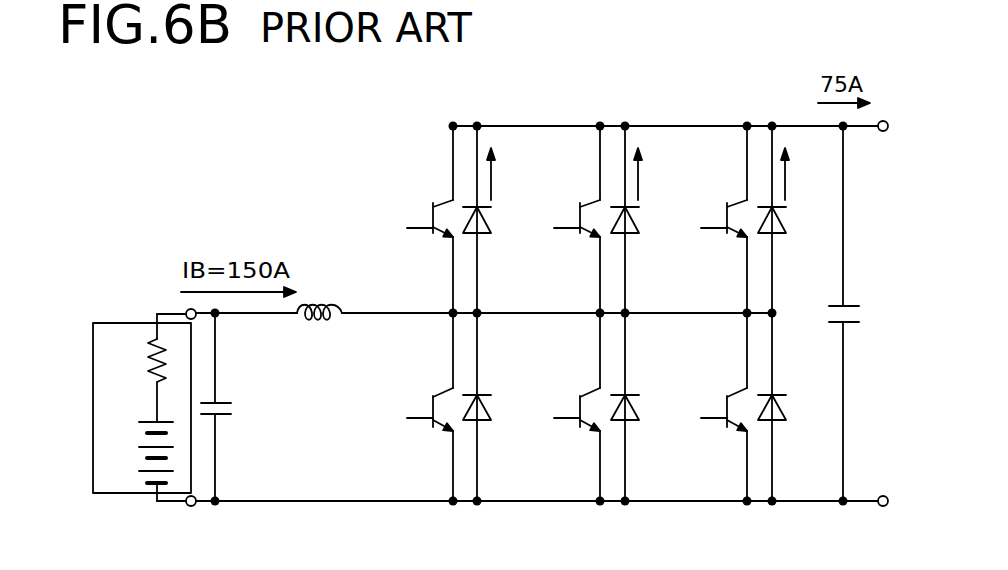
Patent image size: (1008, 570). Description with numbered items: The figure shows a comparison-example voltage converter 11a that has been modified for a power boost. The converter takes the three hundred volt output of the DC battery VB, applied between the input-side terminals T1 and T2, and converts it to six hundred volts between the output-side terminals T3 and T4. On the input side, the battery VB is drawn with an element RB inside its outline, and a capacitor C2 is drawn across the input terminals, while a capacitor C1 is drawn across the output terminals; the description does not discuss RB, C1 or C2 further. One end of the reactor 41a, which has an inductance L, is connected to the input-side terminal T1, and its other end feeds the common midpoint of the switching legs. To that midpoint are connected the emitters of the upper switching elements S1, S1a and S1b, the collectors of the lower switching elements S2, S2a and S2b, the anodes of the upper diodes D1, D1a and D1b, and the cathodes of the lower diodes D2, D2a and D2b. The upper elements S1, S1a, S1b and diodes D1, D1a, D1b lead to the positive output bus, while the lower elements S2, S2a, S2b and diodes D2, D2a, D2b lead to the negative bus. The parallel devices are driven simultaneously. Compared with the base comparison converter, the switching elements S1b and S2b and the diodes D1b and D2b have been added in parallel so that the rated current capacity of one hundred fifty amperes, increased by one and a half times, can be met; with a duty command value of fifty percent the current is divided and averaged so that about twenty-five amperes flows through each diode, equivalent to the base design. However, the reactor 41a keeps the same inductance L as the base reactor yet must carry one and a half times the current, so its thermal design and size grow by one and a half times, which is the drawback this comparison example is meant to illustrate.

The voltage converter 11a is at (676, 119).
The reactor 41a is at (322, 322).
The switching element S1b is at (432, 203).
The switching element S1a is at (579, 203).
The switching element S1 is at (726, 203).
The switching element S2b is at (432, 396).
The switching element S2a is at (579, 396).
The switching element S2 is at (726, 396).
The diode D1b is at (490, 234).
The diode D1a is at (638, 234).
The diode D1 is at (785, 234).
The diode D2b is at (481, 394).
The diode D2a is at (629, 394).
The diode D2 is at (776, 394).
The output smoothing capacitor C1 is at (853, 313).
The input capacitor C2 is at (226, 407).
The inductance L is at (319, 296).
The DC battery VB is at (141, 391).
The battery internal resistance RB is at (106, 304).
The input-side terminal T1 is at (186, 312).
The input-side terminal T2 is at (191, 507).
The output-side terminal T3 is at (883, 132).
The output-side terminal T4 is at (883, 495).